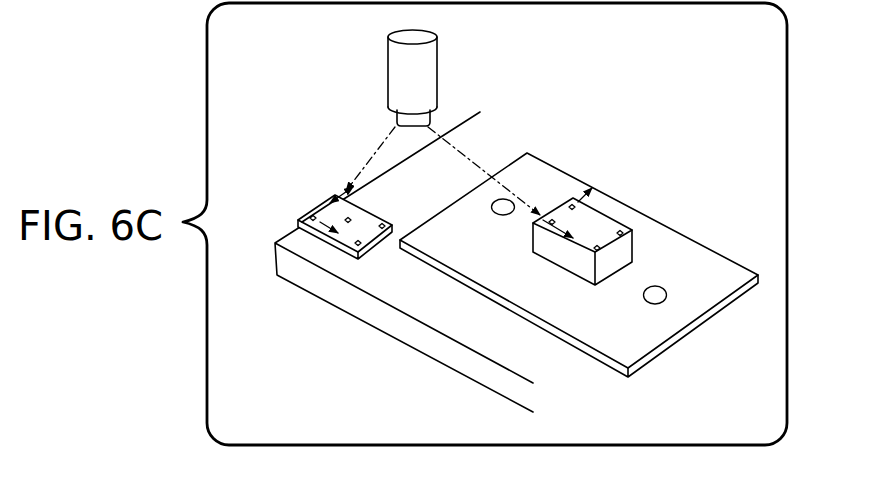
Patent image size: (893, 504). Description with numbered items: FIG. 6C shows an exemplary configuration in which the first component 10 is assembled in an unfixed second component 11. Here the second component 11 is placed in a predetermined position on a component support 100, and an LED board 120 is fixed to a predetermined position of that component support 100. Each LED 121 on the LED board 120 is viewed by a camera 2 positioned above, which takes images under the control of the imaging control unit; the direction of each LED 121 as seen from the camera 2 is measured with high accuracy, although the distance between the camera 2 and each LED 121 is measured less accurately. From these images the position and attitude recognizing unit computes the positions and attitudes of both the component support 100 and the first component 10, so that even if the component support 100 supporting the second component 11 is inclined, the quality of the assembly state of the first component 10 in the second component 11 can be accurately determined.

The camera 2 is at (418, 69).
The first component 10 is at (587, 229).
The second component 11 is at (547, 181).
The component support 100 is at (476, 366).
The LED board 120 is at (380, 249).
The LED 121 is at (382, 223).